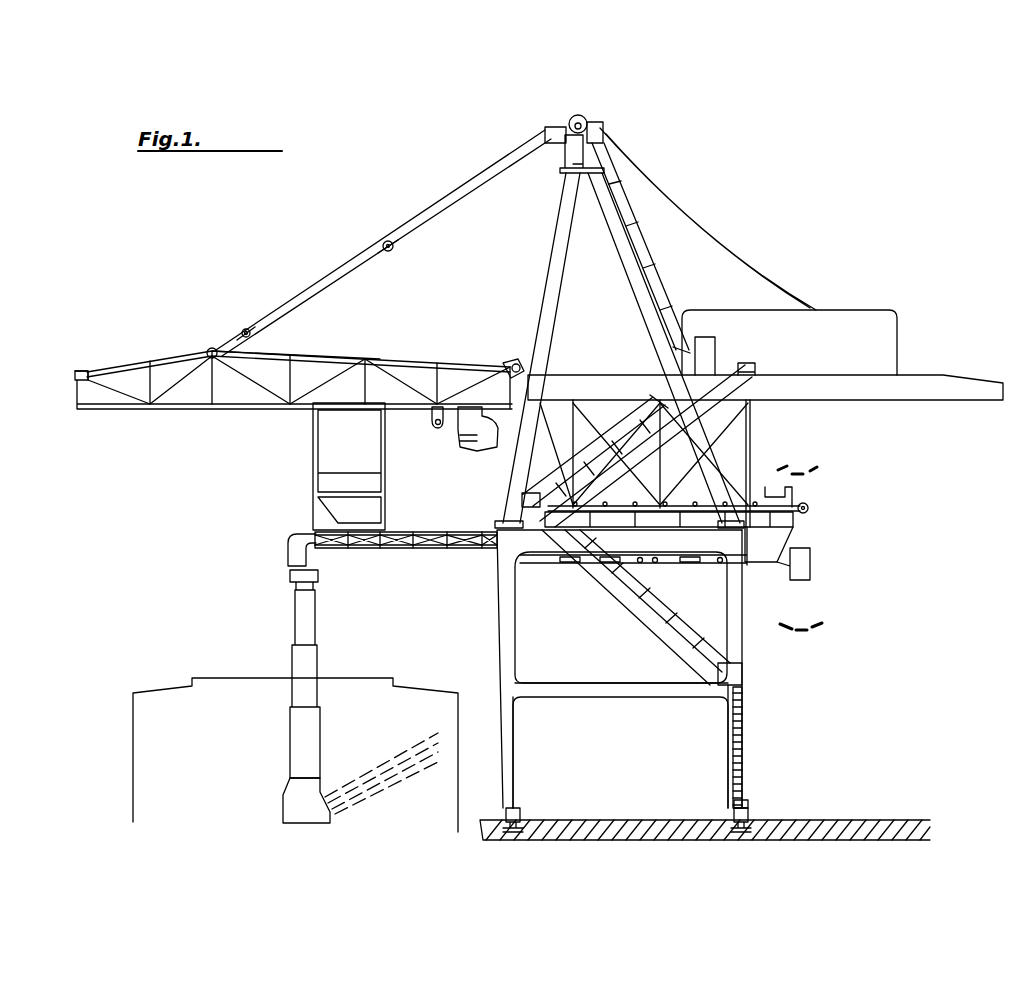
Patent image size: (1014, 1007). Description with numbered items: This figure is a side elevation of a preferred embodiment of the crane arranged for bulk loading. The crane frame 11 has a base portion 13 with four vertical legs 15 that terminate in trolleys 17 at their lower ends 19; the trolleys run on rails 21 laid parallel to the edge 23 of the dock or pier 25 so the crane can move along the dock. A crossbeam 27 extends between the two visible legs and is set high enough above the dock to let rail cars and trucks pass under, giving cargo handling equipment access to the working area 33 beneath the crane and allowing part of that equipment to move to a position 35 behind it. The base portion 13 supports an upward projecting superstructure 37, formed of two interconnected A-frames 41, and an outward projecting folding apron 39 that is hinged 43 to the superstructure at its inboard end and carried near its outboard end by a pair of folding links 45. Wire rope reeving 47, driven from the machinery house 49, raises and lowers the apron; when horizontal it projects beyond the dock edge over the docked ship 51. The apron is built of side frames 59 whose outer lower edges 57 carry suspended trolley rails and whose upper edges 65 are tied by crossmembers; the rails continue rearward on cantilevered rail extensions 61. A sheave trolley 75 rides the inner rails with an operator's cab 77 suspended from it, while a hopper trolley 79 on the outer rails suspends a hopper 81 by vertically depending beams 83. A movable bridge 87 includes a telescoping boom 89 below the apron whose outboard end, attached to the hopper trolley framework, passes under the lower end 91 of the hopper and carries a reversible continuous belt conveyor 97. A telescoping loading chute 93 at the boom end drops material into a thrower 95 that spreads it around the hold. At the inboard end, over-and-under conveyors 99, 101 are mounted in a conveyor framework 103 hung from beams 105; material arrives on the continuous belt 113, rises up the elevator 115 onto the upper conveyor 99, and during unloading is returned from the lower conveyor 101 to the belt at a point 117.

The crane frame 11 is at (477, 584).
The base portion 13 is at (744, 650).
The vertical legs 15 is at (731, 740).
The trolleys 17 is at (752, 814).
The lower ends 19 is at (746, 806).
The rails 21 is at (512, 819).
The edge 23 is at (480, 832).
The dock or pier 25 is at (656, 820).
The crossbeam 27 is at (578, 683).
The working area 33 is at (638, 771).
The rearward position 35 is at (909, 456).
The superstructure 37 is at (608, 309).
The folding apron 39 is at (278, 439).
The A-frames 41 is at (545, 287).
The hinge 43 is at (513, 362).
The folding links 45 is at (417, 236).
The wire rope reeving 47 is at (424, 210).
The machinery house 49 is at (816, 356).
The ship 51 is at (394, 729).
The outer lower edges 57 is at (88, 410).
The apron side frames 59 is at (279, 383).
The cantilevered rail extensions 61 is at (940, 400).
The upper edges 65 is at (305, 356).
The sheave trolley 75 is at (442, 405).
The operator's cab 77 is at (466, 455).
The hopper trolley 79 is at (306, 479).
The hopper 81 is at (318, 510).
The vertically depending beams 83 is at (386, 456).
The movable bridge 87 is at (453, 528).
The telescoping boom 89 is at (376, 548).
The lower end of hopper 91 is at (345, 548).
The telescoping loading chute 93 is at (318, 662).
The thrower 95 is at (283, 814).
The reversible continuous belt conveyor 97 is at (409, 548).
The upper conveyor 99 is at (758, 508).
The lower conveyor 101 is at (751, 565).
The conveyor framework 103 is at (794, 540).
The beams 105 is at (749, 428).
The continuous belt 113 is at (820, 628).
The elevator 115 is at (805, 468).
The point 117 is at (806, 580).